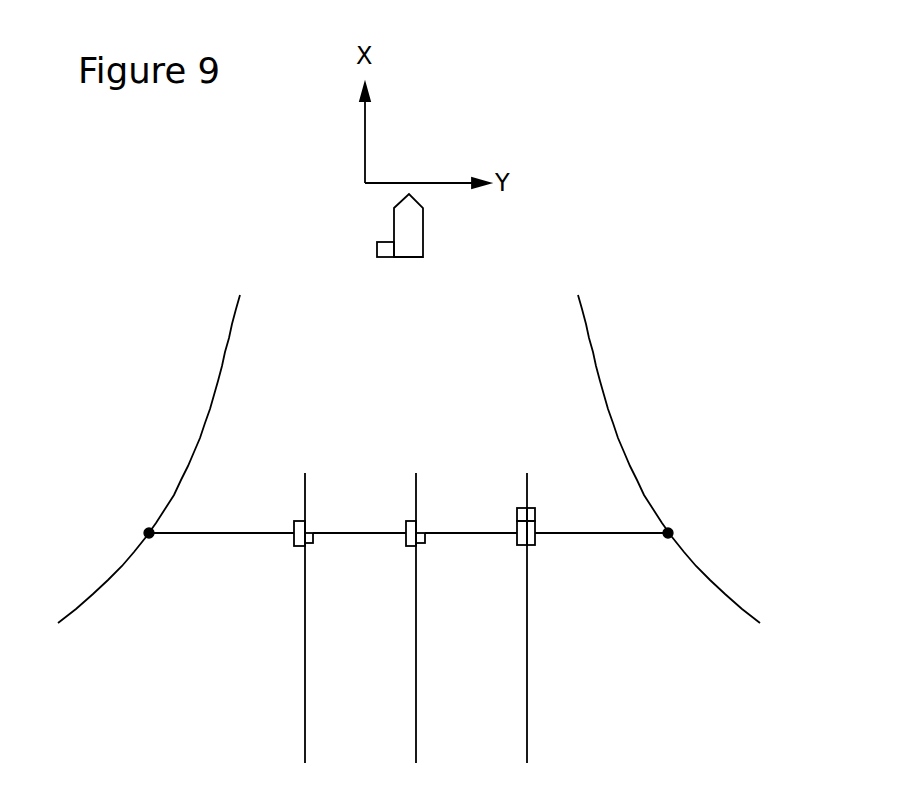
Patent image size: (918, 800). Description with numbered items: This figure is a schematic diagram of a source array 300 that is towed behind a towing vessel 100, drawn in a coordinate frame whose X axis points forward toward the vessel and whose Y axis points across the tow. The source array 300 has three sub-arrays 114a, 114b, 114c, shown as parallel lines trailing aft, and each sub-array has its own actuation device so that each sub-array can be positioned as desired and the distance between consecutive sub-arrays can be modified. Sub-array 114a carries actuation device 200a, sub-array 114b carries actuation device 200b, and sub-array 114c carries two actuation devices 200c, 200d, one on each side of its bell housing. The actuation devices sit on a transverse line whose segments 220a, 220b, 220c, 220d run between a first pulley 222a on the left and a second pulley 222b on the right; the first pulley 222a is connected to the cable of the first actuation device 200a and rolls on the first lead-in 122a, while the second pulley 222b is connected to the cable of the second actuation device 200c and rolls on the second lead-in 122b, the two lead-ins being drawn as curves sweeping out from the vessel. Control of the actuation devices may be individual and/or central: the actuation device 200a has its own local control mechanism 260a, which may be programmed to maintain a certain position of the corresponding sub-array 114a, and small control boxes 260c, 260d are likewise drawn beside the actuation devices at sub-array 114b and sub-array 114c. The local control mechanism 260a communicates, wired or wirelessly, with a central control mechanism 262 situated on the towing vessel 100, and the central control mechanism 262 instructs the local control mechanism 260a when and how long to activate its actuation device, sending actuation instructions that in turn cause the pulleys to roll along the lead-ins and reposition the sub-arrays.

The towing vessel 100 is at (413, 227).
The central control mechanism 262 is at (377, 249).
The source array 300 is at (442, 370).
The first lead-in 122a is at (203, 432).
The second lead-in 122b is at (595, 366).
The first pulley 222a is at (107, 514).
The second pulley 222b is at (673, 527).
The line segment a 220a is at (209, 535).
The line segment b 220b is at (341, 532).
The line segment c 220c is at (583, 532).
The line segment d 220d is at (453, 532).
The sub-array 114a is at (305, 680).
The sub-array 114b is at (416, 677).
The sub-array 114c is at (527, 678).
The first actuation device 200a is at (294, 534).
The actuation device 200b is at (406, 540).
The second actuation device 200c is at (535, 543).
The actuation device 200d is at (517, 543).
The local control mechanism 260a is at (310, 543).
The sensor c 260c is at (532, 507).
The sensor d 260d is at (519, 507).